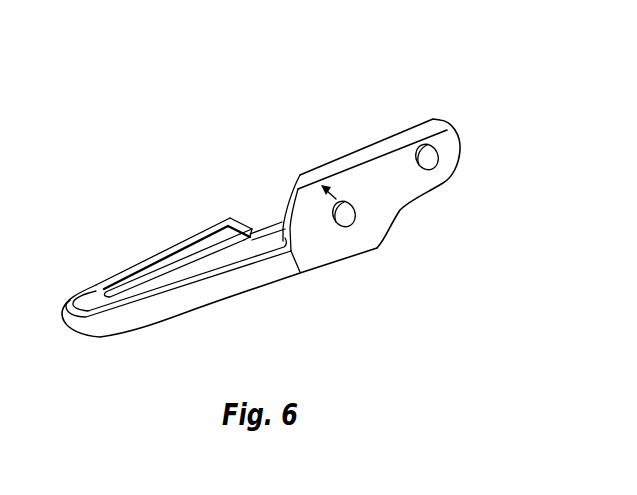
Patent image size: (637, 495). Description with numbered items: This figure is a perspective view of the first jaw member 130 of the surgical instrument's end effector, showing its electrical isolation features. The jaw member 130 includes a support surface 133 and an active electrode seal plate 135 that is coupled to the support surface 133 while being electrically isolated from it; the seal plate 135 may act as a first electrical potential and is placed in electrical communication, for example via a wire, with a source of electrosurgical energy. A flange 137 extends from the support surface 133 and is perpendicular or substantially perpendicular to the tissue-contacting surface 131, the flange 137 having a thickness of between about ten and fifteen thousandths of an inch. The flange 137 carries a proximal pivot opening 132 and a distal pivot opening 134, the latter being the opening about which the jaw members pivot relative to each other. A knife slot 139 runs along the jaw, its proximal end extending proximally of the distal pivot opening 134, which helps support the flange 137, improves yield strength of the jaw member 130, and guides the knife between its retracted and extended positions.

The first jaw member 130 is at (487, 84).
The tissue-contacting surface 131 is at (98, 300).
The proximal pivot opening 132 is at (440, 167).
The support surface 133 is at (187, 312).
The distal pivot opening 134 is at (339, 230).
The active electrode seal plate 135 is at (185, 247).
The flange 137 is at (390, 165).
The knife slot 139 is at (148, 284).